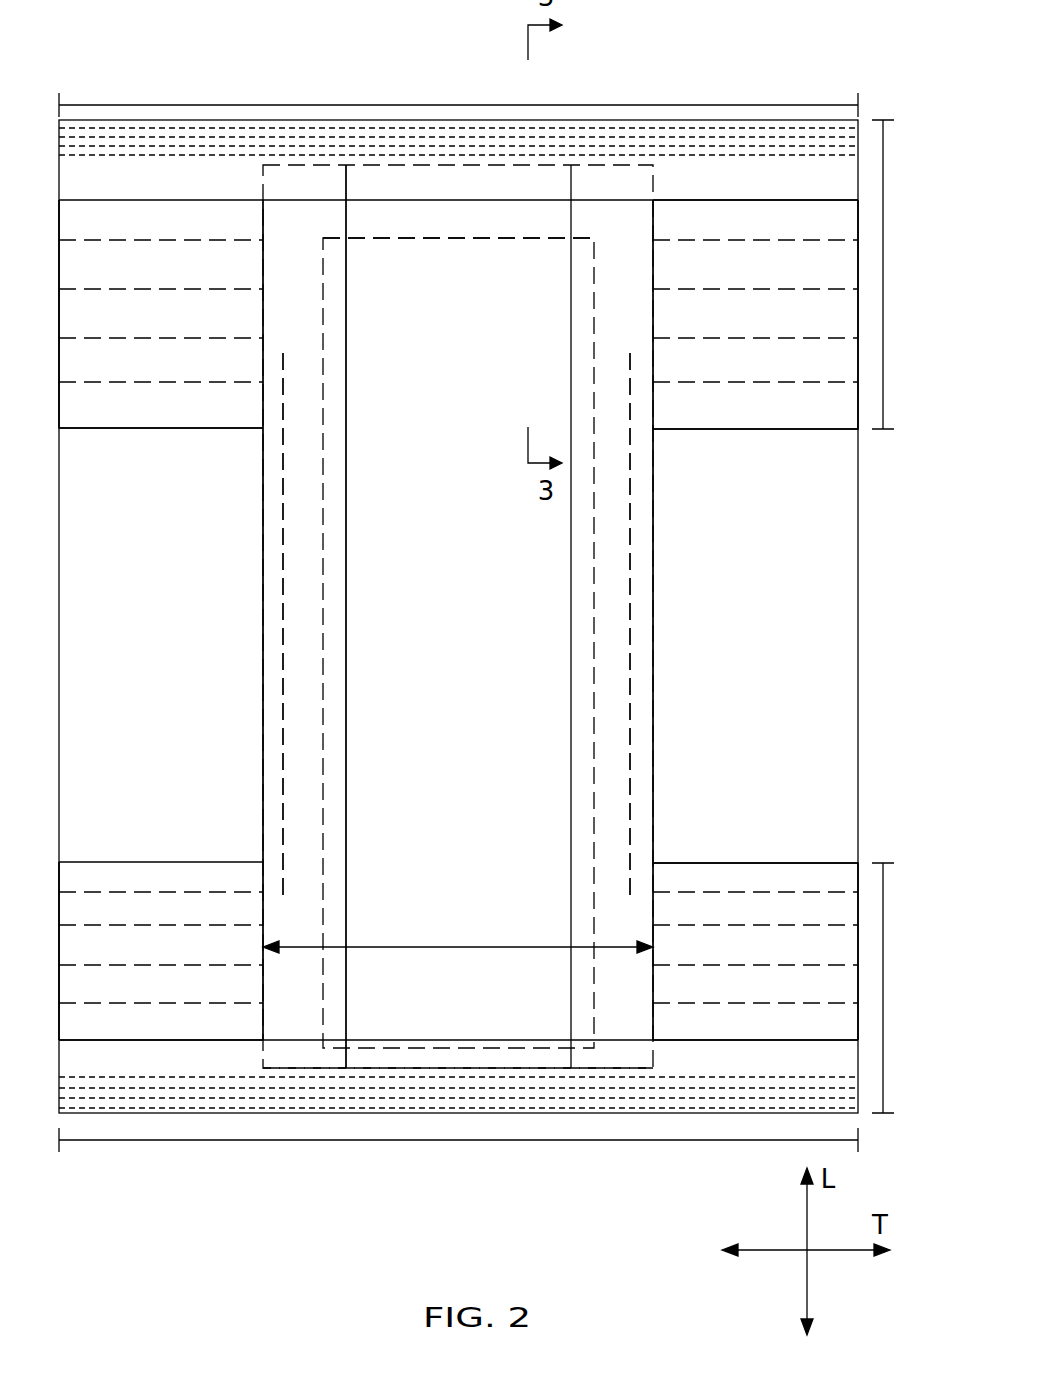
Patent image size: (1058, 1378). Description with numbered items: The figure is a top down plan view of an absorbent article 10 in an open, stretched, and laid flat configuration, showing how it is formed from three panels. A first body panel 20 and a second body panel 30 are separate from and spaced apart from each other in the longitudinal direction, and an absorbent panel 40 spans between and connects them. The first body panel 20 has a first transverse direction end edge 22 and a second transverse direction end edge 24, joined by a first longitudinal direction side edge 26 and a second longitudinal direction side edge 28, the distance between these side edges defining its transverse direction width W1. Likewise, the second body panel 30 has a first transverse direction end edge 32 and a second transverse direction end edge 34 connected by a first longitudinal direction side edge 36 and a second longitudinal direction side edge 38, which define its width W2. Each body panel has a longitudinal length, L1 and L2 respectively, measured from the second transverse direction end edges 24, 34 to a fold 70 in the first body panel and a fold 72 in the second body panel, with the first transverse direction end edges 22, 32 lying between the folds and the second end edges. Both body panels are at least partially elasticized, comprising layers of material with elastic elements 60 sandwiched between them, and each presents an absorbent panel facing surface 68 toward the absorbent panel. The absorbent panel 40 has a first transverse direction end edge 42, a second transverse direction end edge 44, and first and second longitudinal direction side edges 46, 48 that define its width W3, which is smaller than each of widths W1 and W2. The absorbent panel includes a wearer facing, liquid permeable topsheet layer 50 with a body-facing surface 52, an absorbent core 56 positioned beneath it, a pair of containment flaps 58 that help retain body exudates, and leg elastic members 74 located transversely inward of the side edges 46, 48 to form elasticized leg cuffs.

The absorbent article 10 is at (138, 34).
The first body panel 20 is at (112, 985).
The first transverse direction end edge 22 is at (723, 1040).
The second transverse direction end edge 24 is at (780, 863).
The first longitudinal direction side edge 26 is at (858, 942).
The second longitudinal direction side edge 28 is at (59, 937).
The second body panel 30 is at (125, 410).
The first transverse direction end edge 32 is at (822, 200).
The second transverse direction end edge 34 is at (705, 430).
The first longitudinal direction side edge 36 is at (858, 313).
The second longitudinal direction side edge 38 is at (58, 268).
The absorbent panel 40 is at (547, 667).
The first transverse direction end edge 42 is at (445, 1057).
The second transverse direction end edge 44 is at (402, 165).
The first longitudinal direction side edge 46 is at (653, 608).
The second longitudinal direction side edge 48 is at (263, 695).
The topsheet layer 50 is at (363, 797).
The body-facing surface 52 is at (450, 692).
The absorbent core 56 is at (513, 680).
The containment flaps 58 is at (298, 740).
The elastic elements 60 is at (705, 145).
The absorbent panel facing surface 68 is at (150, 329).
The fold 70 is at (317, 1113).
The fold 72 is at (553, 118).
The leg elastic members 74 is at (283, 552).
The transverse direction width W1 is at (410, 1142).
The transverse direction width W2 is at (355, 102).
The transverse direction width W3 is at (472, 940).
The length L1 is at (885, 986).
The length L2 is at (885, 242).